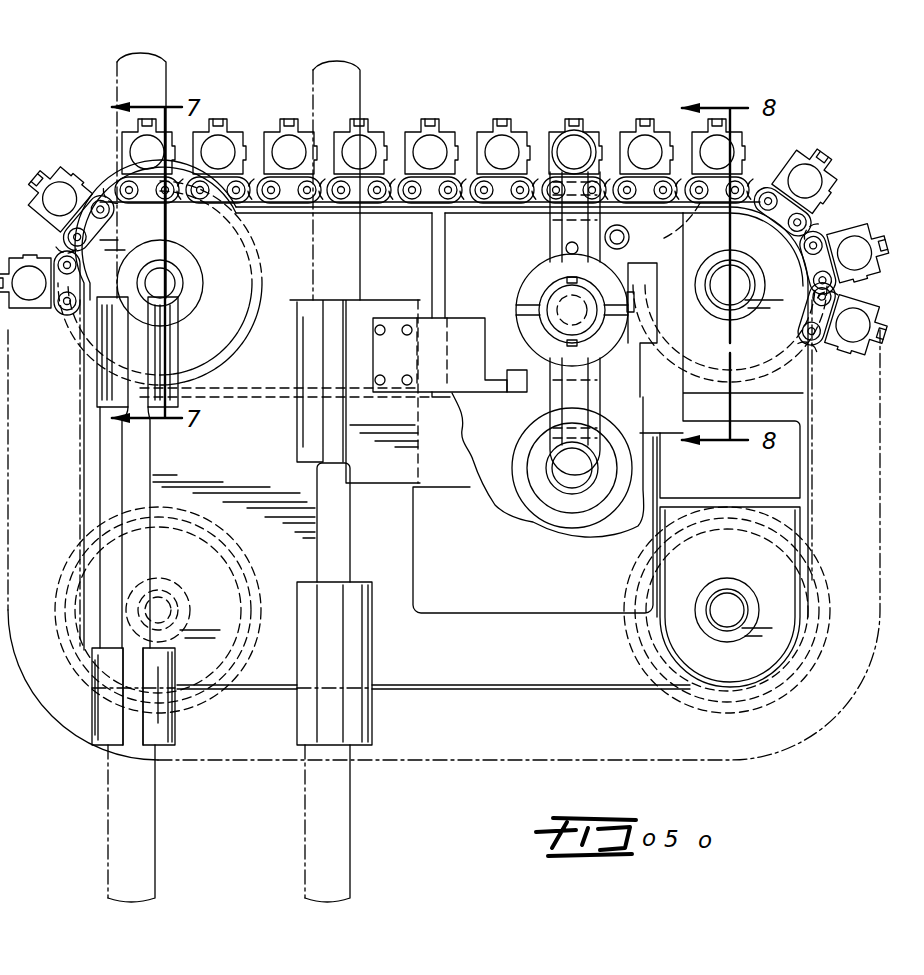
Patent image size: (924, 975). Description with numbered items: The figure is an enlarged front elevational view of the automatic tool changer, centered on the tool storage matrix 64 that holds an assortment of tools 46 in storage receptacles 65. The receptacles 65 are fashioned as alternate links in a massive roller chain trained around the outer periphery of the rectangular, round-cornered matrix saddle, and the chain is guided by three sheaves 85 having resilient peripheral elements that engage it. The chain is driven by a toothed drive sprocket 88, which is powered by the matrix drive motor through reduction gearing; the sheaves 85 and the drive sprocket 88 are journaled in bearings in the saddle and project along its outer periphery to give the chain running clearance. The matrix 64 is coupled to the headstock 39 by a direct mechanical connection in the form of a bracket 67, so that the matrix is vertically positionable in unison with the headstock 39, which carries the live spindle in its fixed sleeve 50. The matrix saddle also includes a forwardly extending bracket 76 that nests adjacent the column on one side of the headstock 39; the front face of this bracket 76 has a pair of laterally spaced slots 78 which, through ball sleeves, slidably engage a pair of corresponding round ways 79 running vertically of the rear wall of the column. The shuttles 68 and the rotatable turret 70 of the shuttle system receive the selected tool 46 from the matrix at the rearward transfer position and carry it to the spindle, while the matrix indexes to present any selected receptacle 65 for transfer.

The headstock 39 is at (472, 460).
The tool 46 is at (578, 150).
The fixed sleeve 50 is at (567, 510).
The tool storage matrix 64 is at (78, 432).
The storage receptacles 65 is at (16, 143).
The bracket 67 is at (448, 320).
The shuttles 68 is at (550, 227).
The rotatable turret 70 is at (533, 300).
The bracket 76 is at (258, 675).
The slots 78 is at (143, 456).
The round ways 79 is at (118, 806).
The sheaves 85 is at (70, 570).
The toothed drive sprocket 88 is at (252, 260).